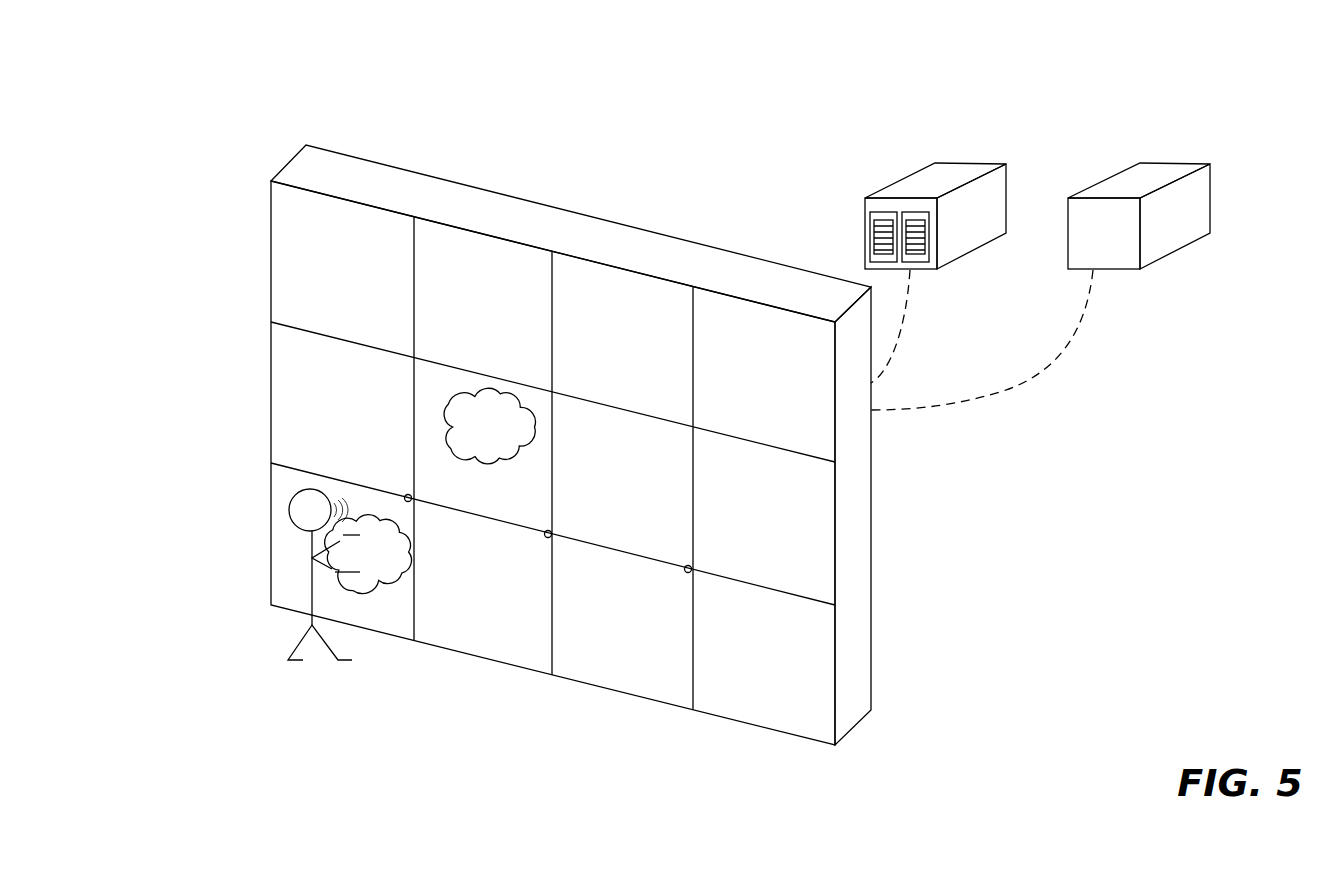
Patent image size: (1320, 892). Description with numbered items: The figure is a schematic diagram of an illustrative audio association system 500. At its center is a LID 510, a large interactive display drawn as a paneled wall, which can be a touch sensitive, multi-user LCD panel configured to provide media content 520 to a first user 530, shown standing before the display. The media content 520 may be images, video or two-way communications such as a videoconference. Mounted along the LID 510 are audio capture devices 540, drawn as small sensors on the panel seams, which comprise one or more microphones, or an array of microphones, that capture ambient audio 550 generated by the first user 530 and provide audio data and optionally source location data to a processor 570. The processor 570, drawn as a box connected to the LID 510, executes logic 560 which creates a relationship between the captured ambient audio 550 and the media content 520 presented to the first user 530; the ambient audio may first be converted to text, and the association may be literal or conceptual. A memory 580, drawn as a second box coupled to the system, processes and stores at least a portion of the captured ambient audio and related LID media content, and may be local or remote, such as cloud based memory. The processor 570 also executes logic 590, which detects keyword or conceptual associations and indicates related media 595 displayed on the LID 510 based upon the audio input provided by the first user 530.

The audio association system 500 is at (195, 107).
The LID 510 is at (562, 208).
The media content 520 is at (385, 588).
The first user 530 is at (324, 595).
The audio capture device 540 is at (408, 498).
The ambient audio 550 is at (333, 506).
The logic 560 is at (870, 234).
The processor 570 is at (972, 162).
The memory 580 is at (1171, 160).
The logic 590 is at (930, 238).
The related media 595 is at (457, 390).